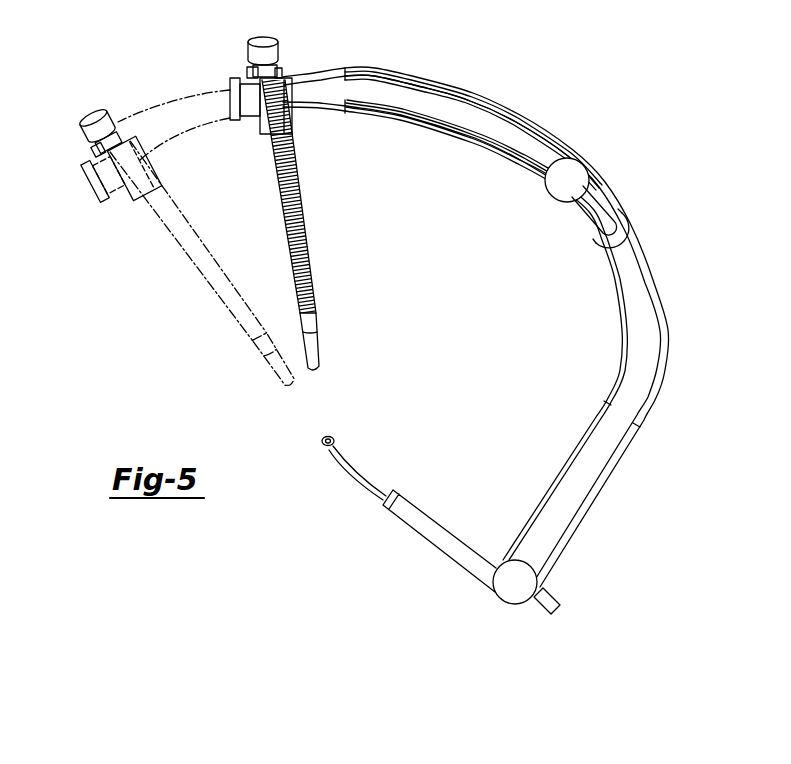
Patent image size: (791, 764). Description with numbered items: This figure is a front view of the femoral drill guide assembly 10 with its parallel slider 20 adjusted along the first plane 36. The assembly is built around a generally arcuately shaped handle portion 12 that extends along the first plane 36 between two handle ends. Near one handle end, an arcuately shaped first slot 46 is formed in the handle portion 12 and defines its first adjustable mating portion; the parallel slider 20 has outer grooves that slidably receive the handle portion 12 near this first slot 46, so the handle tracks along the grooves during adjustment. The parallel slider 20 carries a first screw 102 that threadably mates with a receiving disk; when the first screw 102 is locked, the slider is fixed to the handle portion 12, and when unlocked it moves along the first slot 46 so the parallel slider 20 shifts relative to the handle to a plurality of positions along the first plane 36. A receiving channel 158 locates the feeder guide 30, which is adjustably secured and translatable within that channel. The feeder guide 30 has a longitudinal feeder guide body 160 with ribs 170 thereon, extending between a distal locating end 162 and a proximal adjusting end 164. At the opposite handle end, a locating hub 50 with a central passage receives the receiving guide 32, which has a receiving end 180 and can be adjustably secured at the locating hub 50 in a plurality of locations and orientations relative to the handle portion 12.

The femoral drill guide assembly 10 is at (699, 222).
The handle portion 12 is at (642, 355).
The parallel slider 20 is at (396, 98).
The feeder guide 30 is at (233, 251).
The receiving guide 32 is at (440, 527).
The first plane 36 is at (160, 118).
The first slot 46 is at (592, 212).
The locating hub 50 is at (522, 584).
The first screw 102 is at (567, 178).
The receiving channel 158 is at (290, 124).
The longitudinal feeder guide body 160 is at (305, 250).
The distal locating end 162 is at (320, 348).
The proximal adjusting end 164 is at (263, 36).
The ribs 170 is at (270, 174).
The receiving end 180 is at (324, 437).